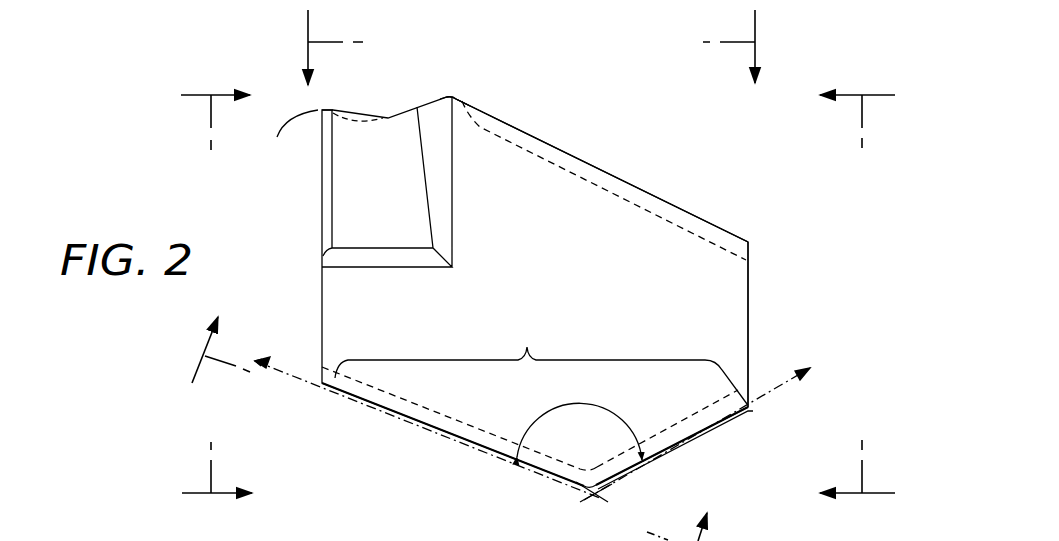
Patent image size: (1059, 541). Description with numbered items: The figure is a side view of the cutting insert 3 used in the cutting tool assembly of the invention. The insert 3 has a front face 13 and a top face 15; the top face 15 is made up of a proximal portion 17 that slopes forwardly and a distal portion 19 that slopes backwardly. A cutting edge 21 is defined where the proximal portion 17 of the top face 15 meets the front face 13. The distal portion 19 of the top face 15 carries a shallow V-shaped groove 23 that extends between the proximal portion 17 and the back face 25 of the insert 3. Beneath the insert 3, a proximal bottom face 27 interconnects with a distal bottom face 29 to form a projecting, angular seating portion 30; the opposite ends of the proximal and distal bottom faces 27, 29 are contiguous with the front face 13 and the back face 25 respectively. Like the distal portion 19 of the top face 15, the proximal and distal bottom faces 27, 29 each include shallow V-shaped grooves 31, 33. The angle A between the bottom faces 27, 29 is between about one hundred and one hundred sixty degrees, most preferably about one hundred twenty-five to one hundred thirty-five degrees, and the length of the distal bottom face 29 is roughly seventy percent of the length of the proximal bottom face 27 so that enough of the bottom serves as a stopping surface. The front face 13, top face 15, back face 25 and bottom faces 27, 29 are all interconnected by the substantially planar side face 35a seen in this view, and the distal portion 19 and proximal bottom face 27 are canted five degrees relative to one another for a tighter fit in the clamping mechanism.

The cutting insert 3 is at (300, 98).
The front face 13 is at (322, 272).
The top face 15 is at (480, 100).
The proximal portion 17 is at (388, 112).
The distal portion 19 is at (607, 165).
The cutting edge 21 is at (292, 141).
The V-shaped groove 23 is at (650, 190).
The back face 25 is at (750, 328).
The proximal bottom face 27 is at (450, 436).
The distal bottom face 29 is at (675, 450).
The seating portion 30 is at (541, 360).
The V-shaped groove 31 is at (493, 453).
The V-shaped groove 33 is at (668, 433).
The side face 35a is at (531, 289).
The angle A is at (543, 416).